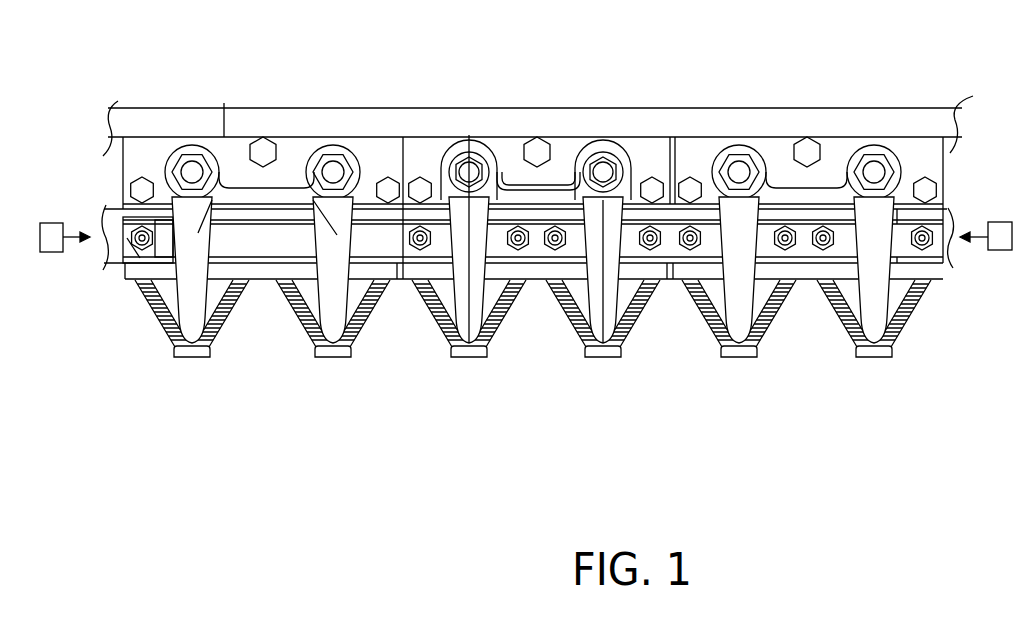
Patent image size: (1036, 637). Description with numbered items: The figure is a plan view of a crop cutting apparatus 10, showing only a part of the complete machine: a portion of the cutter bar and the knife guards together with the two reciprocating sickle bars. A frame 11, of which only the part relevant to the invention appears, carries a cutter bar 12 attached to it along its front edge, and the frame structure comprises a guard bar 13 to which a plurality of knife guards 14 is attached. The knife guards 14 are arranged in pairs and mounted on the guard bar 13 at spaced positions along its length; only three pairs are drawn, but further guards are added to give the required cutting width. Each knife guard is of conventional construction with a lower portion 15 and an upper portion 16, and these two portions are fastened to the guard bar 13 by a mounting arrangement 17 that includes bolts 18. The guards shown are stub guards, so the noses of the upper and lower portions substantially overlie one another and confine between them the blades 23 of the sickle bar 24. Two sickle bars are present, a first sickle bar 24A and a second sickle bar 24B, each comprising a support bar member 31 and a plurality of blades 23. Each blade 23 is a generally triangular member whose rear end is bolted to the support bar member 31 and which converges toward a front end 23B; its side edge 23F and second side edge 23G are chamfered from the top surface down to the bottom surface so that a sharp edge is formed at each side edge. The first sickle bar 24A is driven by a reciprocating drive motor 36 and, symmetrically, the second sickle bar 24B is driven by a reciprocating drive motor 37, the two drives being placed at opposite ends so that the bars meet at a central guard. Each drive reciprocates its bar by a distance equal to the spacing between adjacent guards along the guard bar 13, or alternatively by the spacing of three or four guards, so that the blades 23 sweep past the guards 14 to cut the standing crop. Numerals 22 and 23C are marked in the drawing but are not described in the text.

The crop cutting apparatus 10 is at (398, 335).
The frame 11 is at (381, 119).
The cutter bar 12 is at (277, 336).
The guard bar 13 is at (701, 119).
The knife guards 14 is at (305, 137).
The lower portion 15 is at (494, 372).
The upper portion 16 is at (469, 345).
The mounting arrangement 17 is at (552, 126).
The bolts 18 is at (471, 135).
The knife blade 22 is at (600, 350).
The blades 23 is at (872, 352).
The front end 23B is at (866, 358).
The guard foot right portion 23C is at (882, 358).
The side edge 23F is at (910, 320).
The second side edge 23G is at (850, 287).
The sickle bar 24 is at (400, 237).
The first sickle bar 24A is at (150, 225).
The second sickle bar 24B is at (908, 233).
The support bar member 31 is at (843, 235).
The reciprocating drive motor 36 is at (52, 223).
The reciprocating drive motor 37 is at (994, 222).